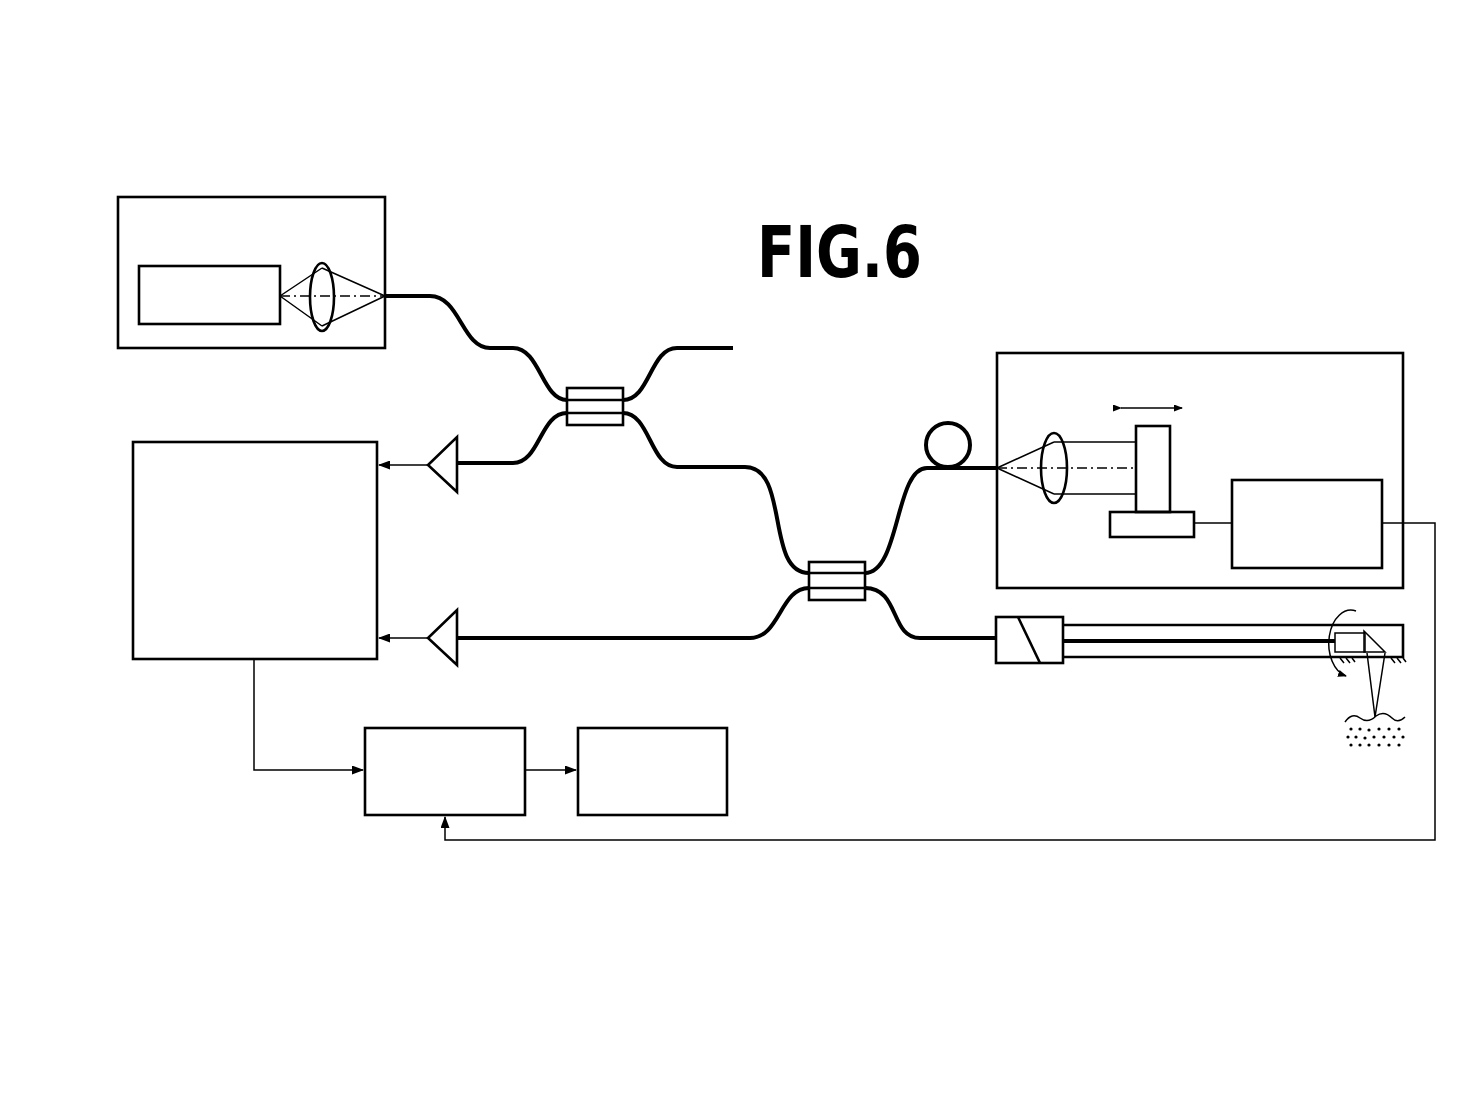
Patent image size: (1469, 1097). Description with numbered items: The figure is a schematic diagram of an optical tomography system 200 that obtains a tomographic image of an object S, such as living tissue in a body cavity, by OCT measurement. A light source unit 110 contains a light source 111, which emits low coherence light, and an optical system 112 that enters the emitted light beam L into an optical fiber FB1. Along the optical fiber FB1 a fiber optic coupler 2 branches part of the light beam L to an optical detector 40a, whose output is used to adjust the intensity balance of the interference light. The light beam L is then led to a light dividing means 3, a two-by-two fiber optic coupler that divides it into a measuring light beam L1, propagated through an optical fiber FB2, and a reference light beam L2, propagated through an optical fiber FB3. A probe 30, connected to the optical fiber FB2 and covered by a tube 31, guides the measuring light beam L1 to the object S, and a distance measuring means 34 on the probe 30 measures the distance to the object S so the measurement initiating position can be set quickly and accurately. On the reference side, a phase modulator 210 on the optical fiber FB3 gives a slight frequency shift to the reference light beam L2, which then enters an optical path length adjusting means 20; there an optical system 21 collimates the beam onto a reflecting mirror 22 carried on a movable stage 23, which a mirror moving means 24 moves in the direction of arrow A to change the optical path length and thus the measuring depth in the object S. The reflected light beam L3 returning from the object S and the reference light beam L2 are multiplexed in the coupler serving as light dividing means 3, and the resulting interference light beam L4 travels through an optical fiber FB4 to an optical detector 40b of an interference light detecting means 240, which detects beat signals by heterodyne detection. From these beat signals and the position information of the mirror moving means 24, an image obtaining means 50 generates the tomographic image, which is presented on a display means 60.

The optical tomography system 200 is at (1227, 84).
The light source unit 110 is at (355, 197).
The light source 111 is at (160, 266).
The optical system 112 is at (324, 263).
The optical fiber FB1 is at (433, 296).
The light beam L is at (486, 361).
The fiber optic coupler 2 is at (603, 427).
The optical detector 40a is at (459, 480).
The optical detector 40b is at (457, 623).
The light dividing means 3 is at (830, 602).
The optical fiber FB2 is at (967, 643).
The optical fiber FB3 is at (903, 521).
The optical fiber FB4 is at (697, 641).
The measuring light beam L1 is at (938, 626).
The reference light beam L2 is at (887, 504).
The reflected light beam L3 is at (912, 652).
The interference light beam L4 is at (658, 626).
The phase modulator 210 is at (950, 422).
The optical path length adjusting means 20 is at (1404, 384).
The optical system 21 is at (1056, 437).
The reflecting mirror 22 is at (1160, 447).
The movable stage 23 is at (1172, 530).
The mirror moving means 24 is at (1360, 480).
The arrow A is at (1158, 407).
The tube 31 is at (1018, 664).
The probe 30 is at (1199, 673).
The distance measuring means 34 is at (1361, 685).
The object to be measured S is at (1393, 718).
The interference light detecting means 240 is at (157, 660).
The image obtaining means 50 is at (387, 727).
The display means 60 is at (600, 727).